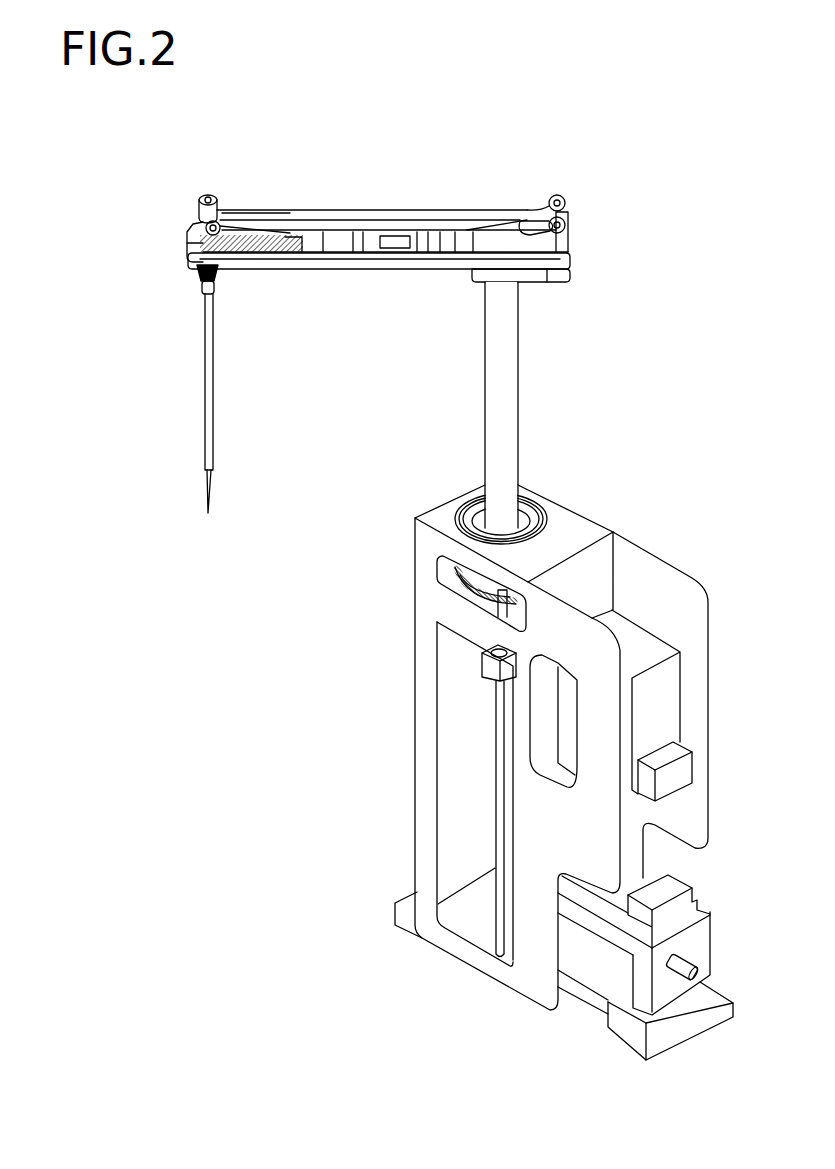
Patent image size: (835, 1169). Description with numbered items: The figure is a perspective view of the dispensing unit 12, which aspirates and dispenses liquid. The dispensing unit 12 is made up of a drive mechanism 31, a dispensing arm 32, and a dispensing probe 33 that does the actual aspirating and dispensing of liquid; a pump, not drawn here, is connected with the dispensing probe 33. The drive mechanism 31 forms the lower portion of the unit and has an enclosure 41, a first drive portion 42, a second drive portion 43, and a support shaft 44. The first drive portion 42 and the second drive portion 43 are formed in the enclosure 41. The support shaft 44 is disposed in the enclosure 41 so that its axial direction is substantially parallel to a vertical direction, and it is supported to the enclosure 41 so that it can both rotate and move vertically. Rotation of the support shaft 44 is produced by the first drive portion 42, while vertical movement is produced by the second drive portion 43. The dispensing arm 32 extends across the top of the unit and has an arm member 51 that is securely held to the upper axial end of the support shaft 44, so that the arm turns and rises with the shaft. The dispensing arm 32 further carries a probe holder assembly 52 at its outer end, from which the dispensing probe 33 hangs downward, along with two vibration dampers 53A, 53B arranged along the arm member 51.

The dispensing unit 12 is at (306, 98).
The drive mechanism 31 is at (320, 728).
The dispensing arm 32 is at (420, 132).
The dispensing probe 33 is at (178, 405).
The enclosure 41 is at (414, 831).
The first drive portion 42 is at (695, 929).
The second drive portion 43 is at (665, 705).
The support shaft 44 is at (522, 402).
The arm member 51 is at (348, 266).
The probe holder assembly 52 is at (190, 237).
The vibration damper 53A is at (468, 229).
The vibration damper 53B is at (447, 206).